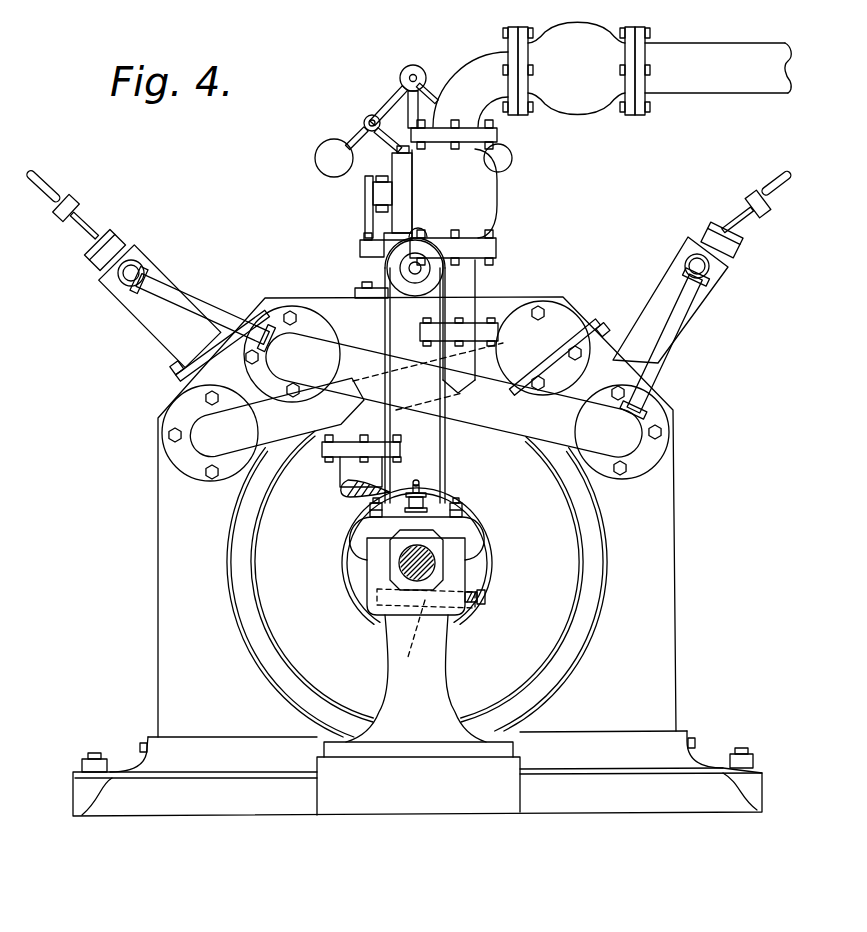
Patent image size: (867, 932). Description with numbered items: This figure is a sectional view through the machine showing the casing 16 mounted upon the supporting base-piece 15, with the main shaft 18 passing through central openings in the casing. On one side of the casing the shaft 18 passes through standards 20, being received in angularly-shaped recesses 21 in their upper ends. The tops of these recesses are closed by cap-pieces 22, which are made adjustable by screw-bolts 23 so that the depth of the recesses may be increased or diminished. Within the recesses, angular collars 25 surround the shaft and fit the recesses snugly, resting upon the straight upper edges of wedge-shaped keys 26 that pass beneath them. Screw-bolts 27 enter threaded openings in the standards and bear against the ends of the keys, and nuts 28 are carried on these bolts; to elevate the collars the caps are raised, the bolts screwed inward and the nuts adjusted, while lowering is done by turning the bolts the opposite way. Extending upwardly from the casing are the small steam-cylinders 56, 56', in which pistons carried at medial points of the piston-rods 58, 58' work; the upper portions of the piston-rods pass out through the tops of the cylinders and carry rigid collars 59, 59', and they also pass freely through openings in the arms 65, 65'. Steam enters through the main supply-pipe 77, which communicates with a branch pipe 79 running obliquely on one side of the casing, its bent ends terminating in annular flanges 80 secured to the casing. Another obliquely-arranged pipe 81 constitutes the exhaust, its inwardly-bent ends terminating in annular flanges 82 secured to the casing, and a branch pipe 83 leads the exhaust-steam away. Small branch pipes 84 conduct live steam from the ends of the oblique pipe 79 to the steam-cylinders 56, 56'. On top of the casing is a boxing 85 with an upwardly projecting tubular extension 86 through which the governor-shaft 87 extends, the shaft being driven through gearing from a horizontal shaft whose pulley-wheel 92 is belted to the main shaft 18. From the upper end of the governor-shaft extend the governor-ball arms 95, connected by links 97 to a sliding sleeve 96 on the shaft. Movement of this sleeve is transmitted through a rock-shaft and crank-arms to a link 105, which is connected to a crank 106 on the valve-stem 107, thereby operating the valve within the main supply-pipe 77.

The supporting base-piece 15 is at (653, 812).
The casing 16 is at (678, 663).
The shaft 18 is at (432, 564).
The standards 20 is at (418, 715).
The angularly-shaped recesses 21 is at (364, 601).
The cap-pieces 22 is at (471, 533).
The screw-bolts 23 is at (370, 504).
The angular collars 25 is at (395, 577).
The wedge-shaped keys 26 is at (412, 638).
The screw-bolts 27 is at (481, 598).
The nuts 28 is at (467, 608).
The steam-cylinder 56 is at (688, 300).
The steam-cylinder 56' is at (152, 306).
The piston-rod 58 is at (787, 187).
The piston-rod 58' is at (57, 176).
The rigid collar 59 is at (774, 215).
The rigid collar 59' is at (89, 204).
The arm 65 is at (734, 211).
The arm 65' is at (77, 241).
The main supply-pipe 77 is at (708, 48).
The branch pipe 79 is at (454, 395).
The annular flanges 80 is at (282, 312).
The obliquely-arranged pipe 81 is at (346, 400).
The annular flanges 82 is at (185, 465).
The branch pipe 83 is at (342, 481).
The small branch pipes 84 is at (204, 307).
The boxing 85 is at (384, 265).
The tubular extension 86 is at (420, 232).
The governor-shaft 87 is at (400, 96).
The pulley-wheel 92 is at (405, 290).
The governor-ball arms 95 is at (434, 95).
The sliding sleeve 96 is at (333, 178).
The links 97 is at (392, 146).
The link 105 is at (360, 254).
The crank 106 is at (365, 219).
The valve-stem 107 is at (373, 190).